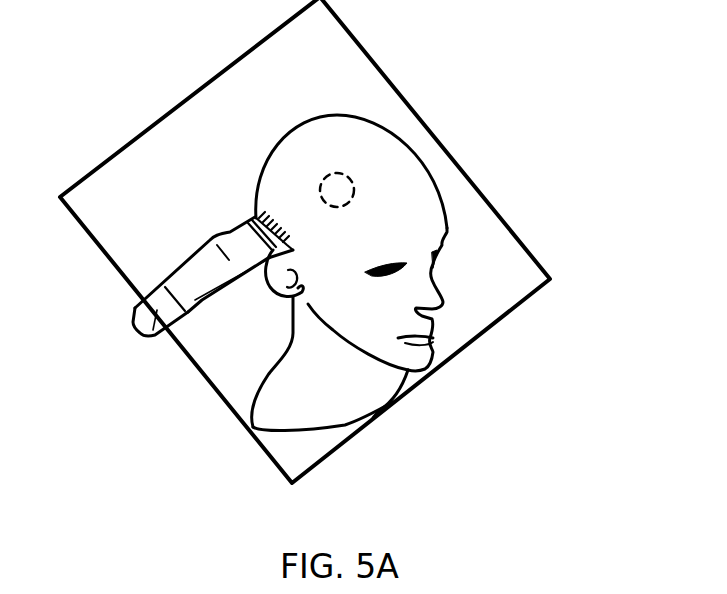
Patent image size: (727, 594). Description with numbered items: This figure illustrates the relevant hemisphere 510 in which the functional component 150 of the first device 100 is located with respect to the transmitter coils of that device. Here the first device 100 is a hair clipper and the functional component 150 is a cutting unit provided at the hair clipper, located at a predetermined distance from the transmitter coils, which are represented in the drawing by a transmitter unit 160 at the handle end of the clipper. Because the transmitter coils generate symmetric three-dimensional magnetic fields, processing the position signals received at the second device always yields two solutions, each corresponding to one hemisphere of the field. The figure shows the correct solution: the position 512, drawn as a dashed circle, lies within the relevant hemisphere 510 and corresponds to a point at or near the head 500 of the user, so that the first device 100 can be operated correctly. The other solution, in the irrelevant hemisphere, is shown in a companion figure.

The first device 100 is at (185, 265).
The functional component 150 is at (267, 267).
The transmitter unit 160 is at (150, 337).
The head 500 is at (392, 152).
The relevant hemisphere 510 is at (485, 188).
The position 512 is at (340, 173).